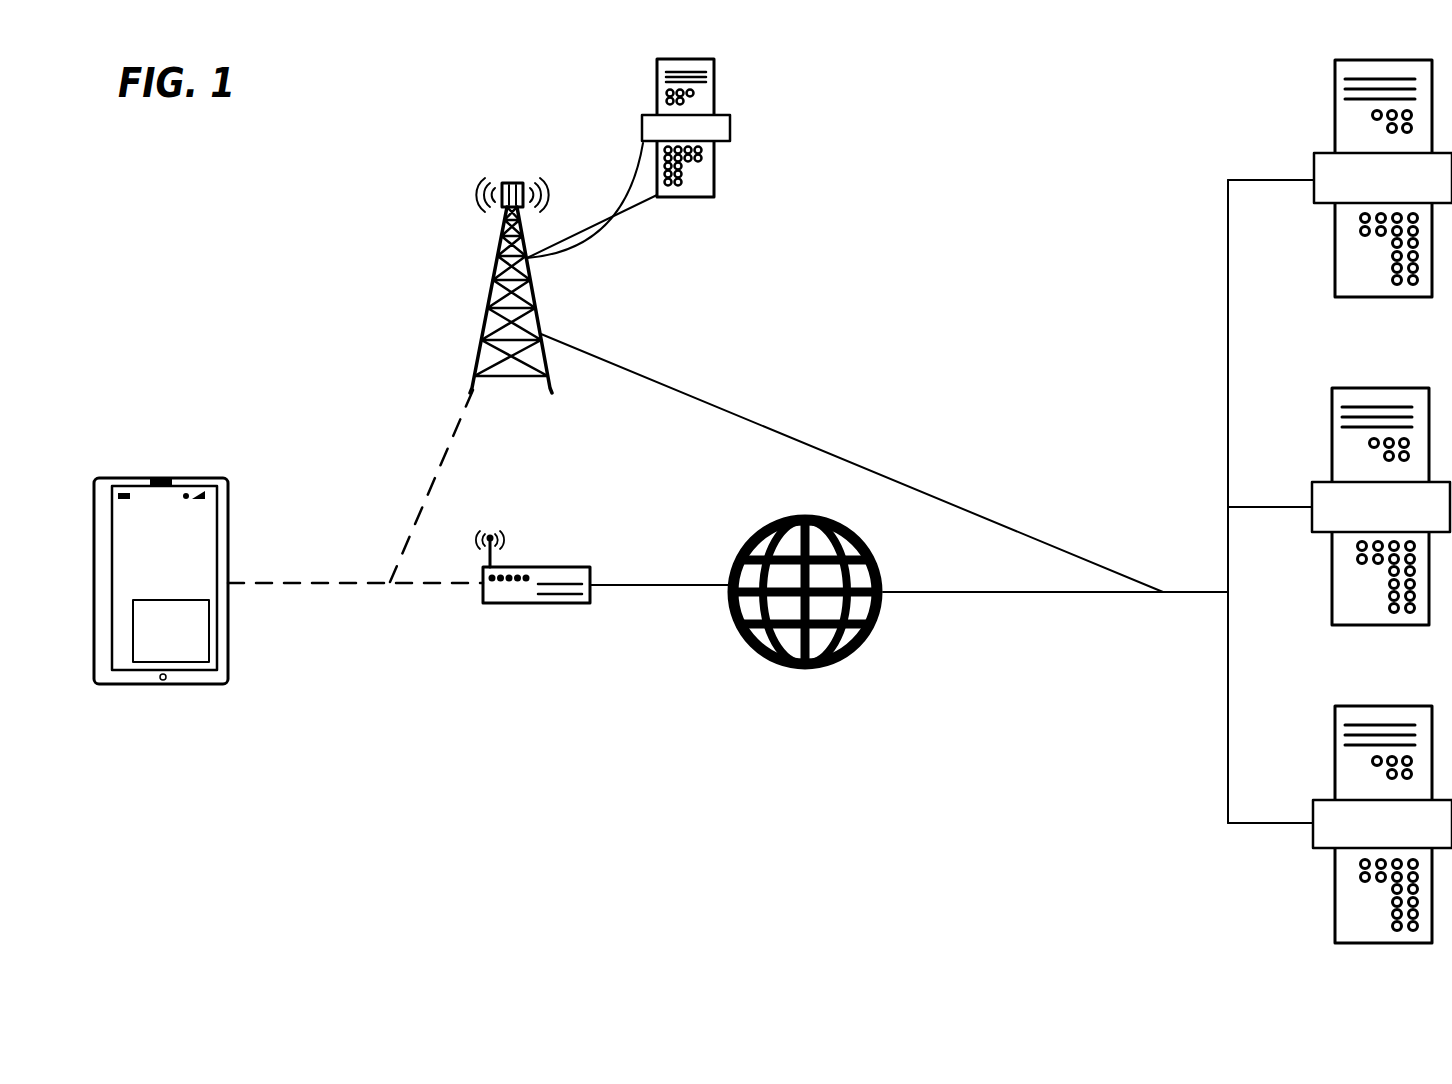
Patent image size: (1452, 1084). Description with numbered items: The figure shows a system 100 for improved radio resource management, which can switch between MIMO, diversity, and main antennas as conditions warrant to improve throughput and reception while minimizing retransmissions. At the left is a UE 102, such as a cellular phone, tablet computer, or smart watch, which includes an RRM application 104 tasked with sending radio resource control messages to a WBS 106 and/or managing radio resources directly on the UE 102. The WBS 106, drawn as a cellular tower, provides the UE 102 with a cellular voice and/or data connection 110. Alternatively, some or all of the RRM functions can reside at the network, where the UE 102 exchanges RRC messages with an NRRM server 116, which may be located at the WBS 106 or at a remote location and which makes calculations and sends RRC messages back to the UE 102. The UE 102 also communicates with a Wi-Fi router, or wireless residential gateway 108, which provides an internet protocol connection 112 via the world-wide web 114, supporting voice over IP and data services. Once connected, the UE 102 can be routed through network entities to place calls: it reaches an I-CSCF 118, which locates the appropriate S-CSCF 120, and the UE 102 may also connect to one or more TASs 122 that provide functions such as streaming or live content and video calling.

The system 100 is at (182, 232).
The UE 102 is at (211, 539).
The RRM application 104 is at (188, 656).
The WBS 106 is at (490, 317).
The wireless residential gateway 108 is at (548, 603).
The cellular voice and/or data connection 110 is at (718, 410).
The internet protocol connection 112 is at (613, 583).
The world-wide web 114 is at (840, 662).
The NRRM server 116 is at (718, 158).
The I-CSCF 118 is at (1313, 848).
The S-CSCF 120 is at (1335, 264).
The TAS 122 is at (1332, 477).